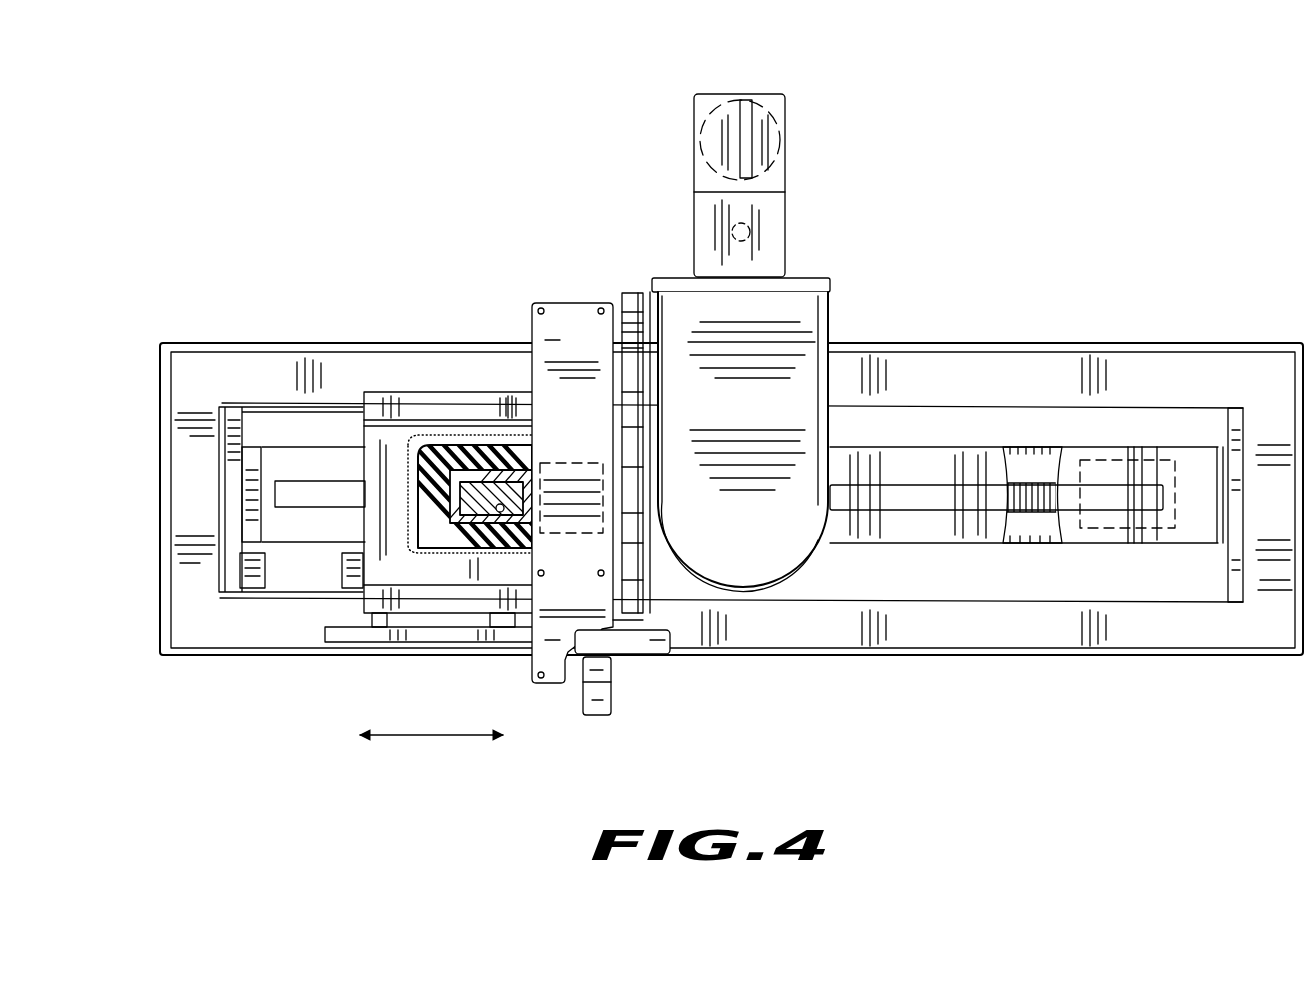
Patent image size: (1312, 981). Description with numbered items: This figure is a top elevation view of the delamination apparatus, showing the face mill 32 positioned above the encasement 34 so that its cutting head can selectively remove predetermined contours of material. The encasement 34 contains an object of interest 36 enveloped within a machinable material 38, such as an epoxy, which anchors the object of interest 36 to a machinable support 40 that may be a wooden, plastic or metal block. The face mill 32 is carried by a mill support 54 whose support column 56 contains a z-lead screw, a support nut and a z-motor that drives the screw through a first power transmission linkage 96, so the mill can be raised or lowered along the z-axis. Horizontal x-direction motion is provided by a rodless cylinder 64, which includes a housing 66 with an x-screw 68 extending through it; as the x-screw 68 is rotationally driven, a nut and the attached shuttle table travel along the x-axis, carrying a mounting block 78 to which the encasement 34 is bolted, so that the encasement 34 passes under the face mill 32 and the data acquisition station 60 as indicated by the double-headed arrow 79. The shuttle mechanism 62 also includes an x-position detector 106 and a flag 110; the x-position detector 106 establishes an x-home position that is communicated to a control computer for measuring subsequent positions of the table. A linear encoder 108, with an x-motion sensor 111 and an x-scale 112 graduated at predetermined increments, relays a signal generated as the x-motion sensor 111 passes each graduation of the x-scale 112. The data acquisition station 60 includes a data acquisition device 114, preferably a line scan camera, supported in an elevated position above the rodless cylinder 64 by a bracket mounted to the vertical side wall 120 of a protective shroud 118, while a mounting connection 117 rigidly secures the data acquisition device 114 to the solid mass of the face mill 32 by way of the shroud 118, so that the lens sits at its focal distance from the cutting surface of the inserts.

The face mill 32 is at (840, 297).
The encasement 34 is at (436, 550).
The object of interest 36 is at (484, 448).
The machinable material 38 is at (485, 550).
The machinable support 40 is at (447, 432).
The mill support 54 is at (736, 88).
The support column 56 is at (781, 92).
The data acquisition station 60 is at (563, 300).
The shuttle mechanism 62 is at (365, 396).
The rodless cylinder 64 is at (1108, 549).
The housing 66 is at (985, 640).
The x-screw 68 is at (1042, 512).
The mounting block 78 is at (512, 402).
The double-headed arrow 79 is at (437, 740).
The first power transmission linkage 96 is at (775, 180).
The x-position detector 106 is at (252, 570).
The flag 110 is at (350, 568).
The x-motion sensor 111 is at (612, 680).
The x-scale 112 is at (345, 638).
The data acquisition device 114 is at (600, 520).
The mounting connection 117 is at (632, 470).
The protective shroud 118 is at (584, 336).
The vertical side wall 120 is at (581, 429).
The linear encoder 108 is at (615, 705).